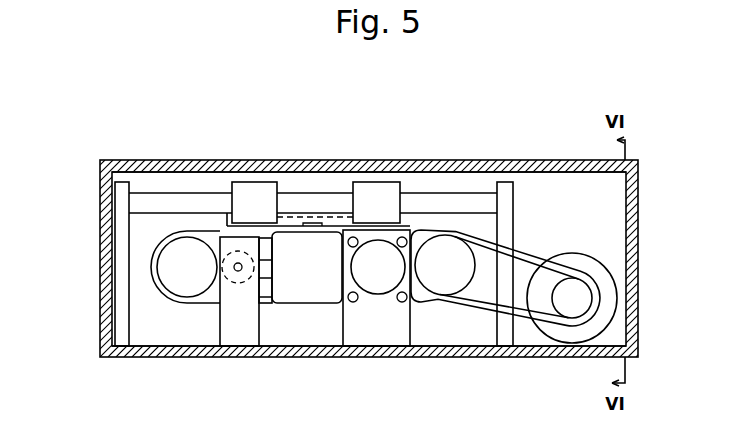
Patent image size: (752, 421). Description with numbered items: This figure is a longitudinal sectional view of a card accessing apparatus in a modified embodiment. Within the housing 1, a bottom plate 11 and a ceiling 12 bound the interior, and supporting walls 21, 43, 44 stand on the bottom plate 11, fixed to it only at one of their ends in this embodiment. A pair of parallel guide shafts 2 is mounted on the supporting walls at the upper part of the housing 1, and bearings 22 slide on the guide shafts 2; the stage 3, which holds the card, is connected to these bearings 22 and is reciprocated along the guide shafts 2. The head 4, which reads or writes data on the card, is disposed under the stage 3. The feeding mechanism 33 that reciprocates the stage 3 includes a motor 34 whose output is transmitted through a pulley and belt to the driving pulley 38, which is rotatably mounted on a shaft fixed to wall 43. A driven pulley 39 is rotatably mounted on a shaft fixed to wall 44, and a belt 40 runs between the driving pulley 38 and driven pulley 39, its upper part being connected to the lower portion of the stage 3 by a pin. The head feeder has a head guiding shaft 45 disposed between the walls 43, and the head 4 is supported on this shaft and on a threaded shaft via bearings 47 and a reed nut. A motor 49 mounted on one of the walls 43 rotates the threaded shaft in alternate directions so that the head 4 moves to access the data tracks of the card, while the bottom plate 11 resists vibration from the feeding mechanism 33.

The housing 1 is at (651, 150).
The guide shafts 2 is at (457, 200).
The stage 3 is at (332, 227).
The head 4 is at (322, 295).
The bottom plate 11 is at (486, 351).
The ceiling 12 is at (413, 166).
The supporting walls 21 is at (122, 290).
The bearings 22 is at (253, 190).
The feeding mechanism 33 is at (539, 233).
The motor 34 is at (587, 270).
The driving pulley 38 is at (450, 243).
The driven pulley 39 is at (168, 277).
The belt 40 is at (200, 237).
The supporting wall 43 is at (391, 333).
The supporting wall 44 is at (239, 331).
The head guiding shaft 45 is at (238, 277).
The bearings 47 is at (253, 290).
The motor 49 is at (380, 280).